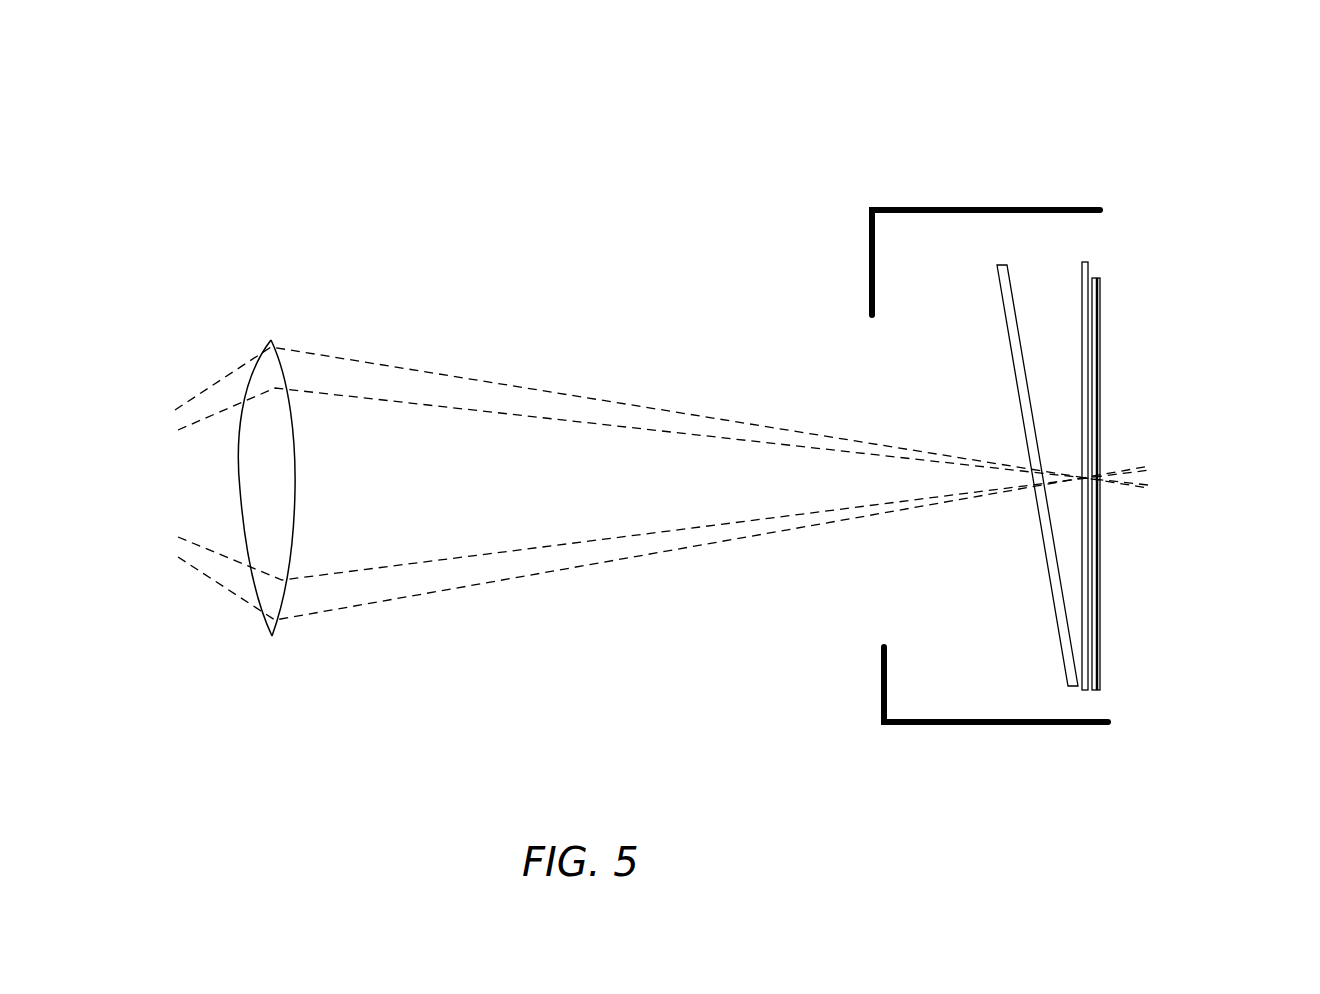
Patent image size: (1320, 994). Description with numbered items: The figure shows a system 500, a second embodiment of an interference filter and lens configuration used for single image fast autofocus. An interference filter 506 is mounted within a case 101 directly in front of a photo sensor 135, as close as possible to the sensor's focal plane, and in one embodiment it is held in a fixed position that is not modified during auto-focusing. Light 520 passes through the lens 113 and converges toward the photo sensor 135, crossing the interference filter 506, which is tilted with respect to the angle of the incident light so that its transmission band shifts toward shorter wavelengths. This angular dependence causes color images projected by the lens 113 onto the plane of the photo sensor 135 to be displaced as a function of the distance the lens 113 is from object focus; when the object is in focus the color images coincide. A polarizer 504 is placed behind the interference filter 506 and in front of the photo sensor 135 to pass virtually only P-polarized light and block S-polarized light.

The system 500 is at (874, 75).
The lens 113 is at (270, 338).
The light 520 is at (403, 378).
The case 101 is at (750, 240).
The interference filter 506 is at (1052, 572).
The polarizer 504 is at (1087, 260).
The photo sensor 135 is at (1214, 655).